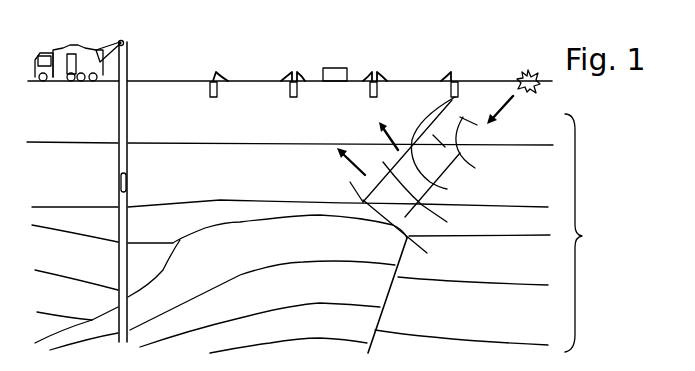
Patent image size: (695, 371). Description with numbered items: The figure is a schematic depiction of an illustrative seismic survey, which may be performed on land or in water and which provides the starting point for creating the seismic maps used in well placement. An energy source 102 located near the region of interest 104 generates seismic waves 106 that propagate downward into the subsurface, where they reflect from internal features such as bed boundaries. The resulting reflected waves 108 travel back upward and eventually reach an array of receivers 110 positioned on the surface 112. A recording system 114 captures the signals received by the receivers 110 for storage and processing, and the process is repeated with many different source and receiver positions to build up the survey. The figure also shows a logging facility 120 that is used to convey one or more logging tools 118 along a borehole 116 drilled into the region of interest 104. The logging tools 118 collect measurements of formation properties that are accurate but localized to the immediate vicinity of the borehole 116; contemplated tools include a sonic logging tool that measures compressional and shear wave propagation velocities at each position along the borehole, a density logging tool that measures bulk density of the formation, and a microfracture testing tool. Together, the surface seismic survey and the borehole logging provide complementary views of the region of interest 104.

The energy source 102 is at (525, 77).
The region of interest 104 is at (319, 233).
The seismic waves 106 is at (437, 174).
The reflected waves 108 is at (362, 147).
The receivers 110 is at (288, 92).
The surface 112 is at (185, 78).
The recording system 114 is at (323, 68).
The borehole 116 is at (130, 110).
The logging tools 118 is at (127, 176).
The logging facility 120 is at (62, 47).